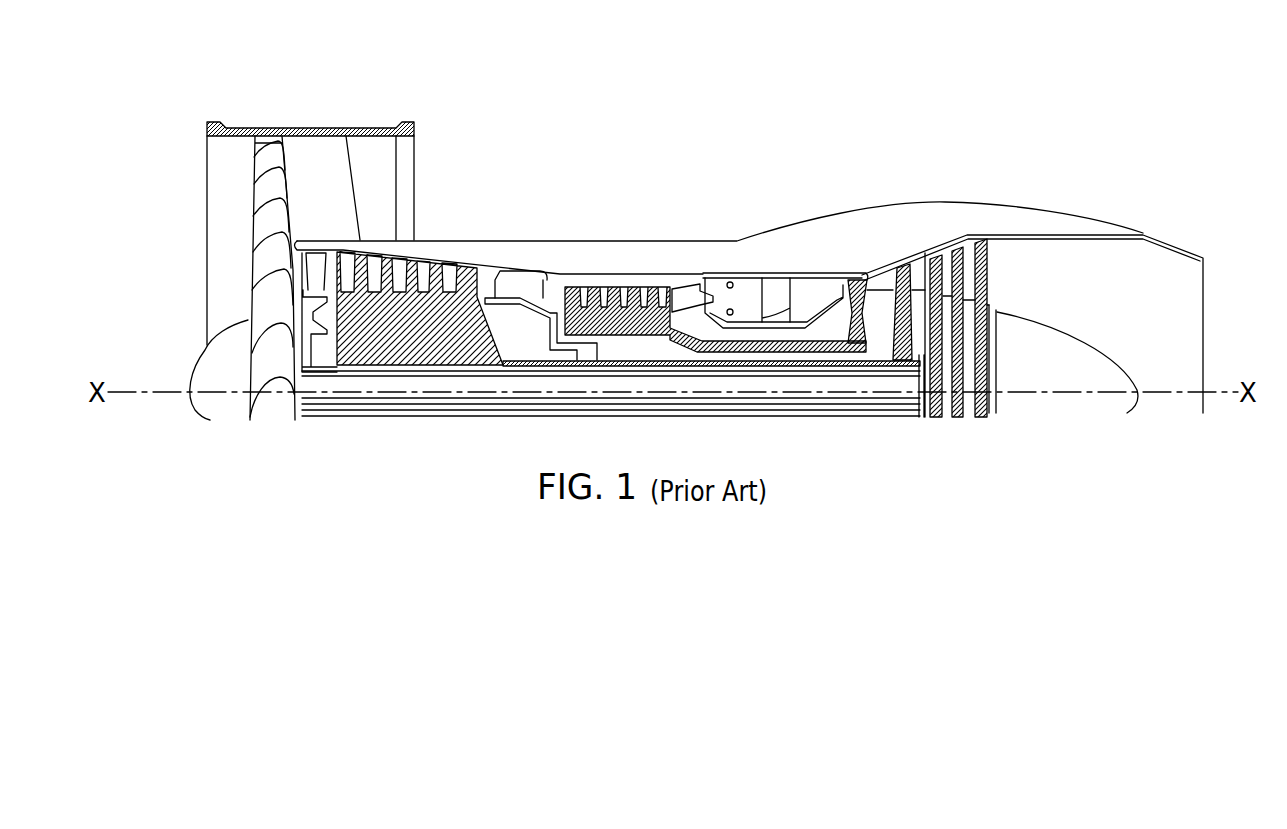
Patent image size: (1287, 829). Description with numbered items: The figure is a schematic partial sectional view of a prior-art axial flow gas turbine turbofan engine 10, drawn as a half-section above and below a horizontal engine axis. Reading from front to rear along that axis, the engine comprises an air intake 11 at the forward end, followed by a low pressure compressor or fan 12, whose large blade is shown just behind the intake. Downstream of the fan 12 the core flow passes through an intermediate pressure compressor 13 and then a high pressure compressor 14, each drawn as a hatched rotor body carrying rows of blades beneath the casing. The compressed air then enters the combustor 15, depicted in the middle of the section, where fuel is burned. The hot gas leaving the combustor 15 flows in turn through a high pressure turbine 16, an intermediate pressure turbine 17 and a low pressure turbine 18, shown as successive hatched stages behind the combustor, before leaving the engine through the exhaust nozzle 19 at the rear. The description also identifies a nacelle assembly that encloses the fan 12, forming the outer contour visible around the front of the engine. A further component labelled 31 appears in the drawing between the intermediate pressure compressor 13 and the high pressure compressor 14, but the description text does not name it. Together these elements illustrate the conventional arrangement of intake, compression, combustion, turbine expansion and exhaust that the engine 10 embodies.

The axial flow gas turbine turbofan engine 10 is at (588, 161).
The air intake 11 is at (185, 256).
The low pressure compressor (or fan) 12 is at (268, 152).
The intermediate pressure compressor 13 is at (417, 303).
The high pressure compressor 14 is at (610, 285).
The combustor 15 is at (777, 268).
The high pressure turbine 16 is at (858, 276).
The intermediate pressure turbine 17 is at (906, 266).
The low pressure turbine 18 is at (957, 250).
The exhaust nozzle 19 is at (1190, 337).
The compressor bleed valve 31 is at (513, 292).